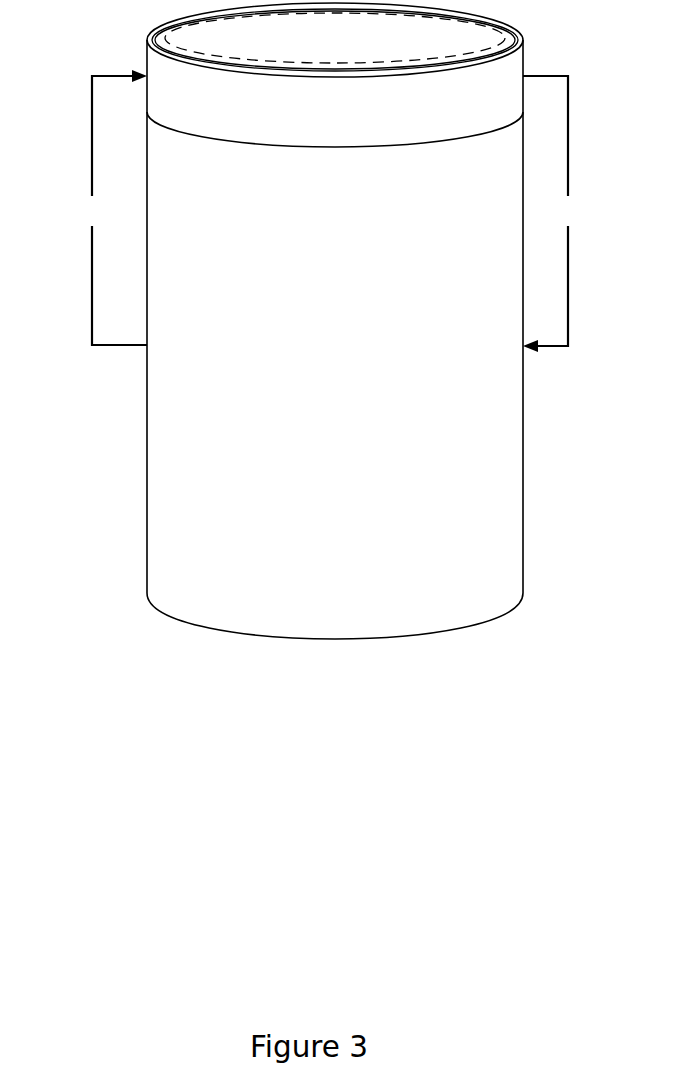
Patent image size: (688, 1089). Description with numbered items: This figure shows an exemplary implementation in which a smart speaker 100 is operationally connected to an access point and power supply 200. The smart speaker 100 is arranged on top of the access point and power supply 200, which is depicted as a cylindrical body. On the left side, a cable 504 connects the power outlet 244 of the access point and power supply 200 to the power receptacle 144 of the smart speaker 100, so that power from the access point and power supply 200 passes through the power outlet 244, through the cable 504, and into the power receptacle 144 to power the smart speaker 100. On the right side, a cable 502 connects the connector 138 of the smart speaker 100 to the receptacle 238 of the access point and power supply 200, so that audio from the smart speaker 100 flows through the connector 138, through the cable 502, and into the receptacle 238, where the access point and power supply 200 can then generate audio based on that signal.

The smart speaker 100 is at (335, 75).
The access point and power supply 200 is at (335, 339).
The power receptacle 144 is at (124, 54).
The connector 138 is at (552, 58).
The power outlet 244 is at (126, 373).
The receptacle 238 is at (552, 378).
The cable 504 is at (109, 207).
The cable 502 is at (555, 214).